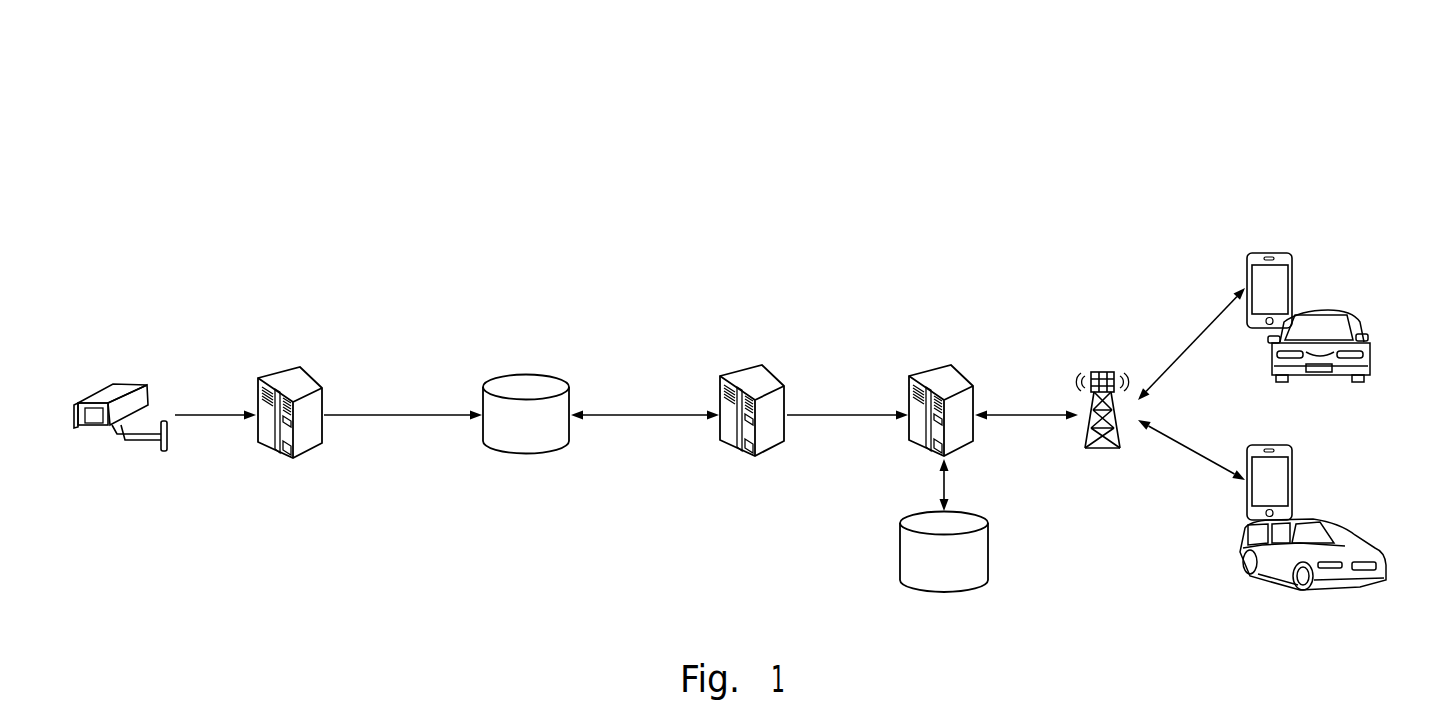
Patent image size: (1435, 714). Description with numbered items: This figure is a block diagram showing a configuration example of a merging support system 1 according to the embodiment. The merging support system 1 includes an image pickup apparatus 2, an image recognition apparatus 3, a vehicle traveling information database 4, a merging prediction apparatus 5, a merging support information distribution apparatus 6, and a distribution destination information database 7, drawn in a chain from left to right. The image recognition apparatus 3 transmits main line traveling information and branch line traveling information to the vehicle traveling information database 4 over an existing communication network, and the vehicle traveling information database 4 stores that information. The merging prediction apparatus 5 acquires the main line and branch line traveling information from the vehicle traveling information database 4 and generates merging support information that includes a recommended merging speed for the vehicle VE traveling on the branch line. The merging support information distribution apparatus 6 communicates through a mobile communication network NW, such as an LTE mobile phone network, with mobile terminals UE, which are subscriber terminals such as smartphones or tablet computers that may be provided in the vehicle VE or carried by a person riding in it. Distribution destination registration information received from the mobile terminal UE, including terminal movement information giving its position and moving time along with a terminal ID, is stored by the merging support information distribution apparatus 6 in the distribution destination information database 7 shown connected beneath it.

The merging support system 1 is at (741, 118).
The image pickup apparatus 2 is at (110, 381).
The image recognition apparatus 3 is at (304, 373).
The vehicle traveling information database 4 is at (529, 372).
The merging prediction apparatus 5 is at (770, 372).
The merging support information distribution apparatus 6 is at (957, 370).
The distribution destination information database 7 is at (900, 550).
The mobile communication network NW is at (1103, 450).
The mobile terminal UE is at (1271, 252).
The vehicle VE is at (1329, 310).